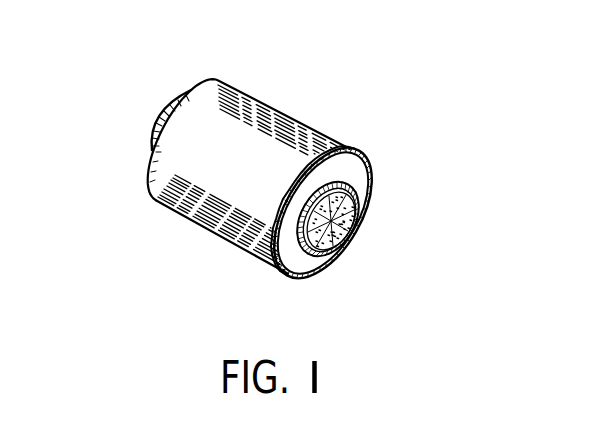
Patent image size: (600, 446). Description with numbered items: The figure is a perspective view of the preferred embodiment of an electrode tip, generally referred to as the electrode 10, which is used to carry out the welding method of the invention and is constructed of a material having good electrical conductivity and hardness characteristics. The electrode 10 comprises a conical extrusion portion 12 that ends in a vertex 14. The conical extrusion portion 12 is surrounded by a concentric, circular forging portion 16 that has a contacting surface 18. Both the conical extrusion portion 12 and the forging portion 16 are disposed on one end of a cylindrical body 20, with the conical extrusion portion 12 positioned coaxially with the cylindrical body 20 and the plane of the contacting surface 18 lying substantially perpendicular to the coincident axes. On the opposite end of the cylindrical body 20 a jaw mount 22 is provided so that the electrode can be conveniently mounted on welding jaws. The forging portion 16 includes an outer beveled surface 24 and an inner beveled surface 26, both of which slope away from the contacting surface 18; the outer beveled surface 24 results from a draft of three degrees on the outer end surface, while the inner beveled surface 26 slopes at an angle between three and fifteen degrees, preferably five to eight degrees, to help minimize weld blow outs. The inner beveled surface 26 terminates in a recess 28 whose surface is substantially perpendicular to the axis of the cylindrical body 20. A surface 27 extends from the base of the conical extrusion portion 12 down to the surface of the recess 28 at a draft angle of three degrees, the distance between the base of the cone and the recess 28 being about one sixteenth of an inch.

The electrode tip 10 is at (342, 99).
The conical extrusion portion 12 is at (367, 213).
The vertex 14 is at (360, 226).
The forging portion 16 is at (363, 160).
The contacting surface 18 is at (300, 283).
The cylindrical body 20 is at (260, 98).
The jaw mount 22 is at (162, 113).
The outer beveled surface 24 is at (347, 152).
The inner beveled surface 26 is at (350, 191).
The surface 27 is at (340, 186).
The recess 28 is at (312, 272).